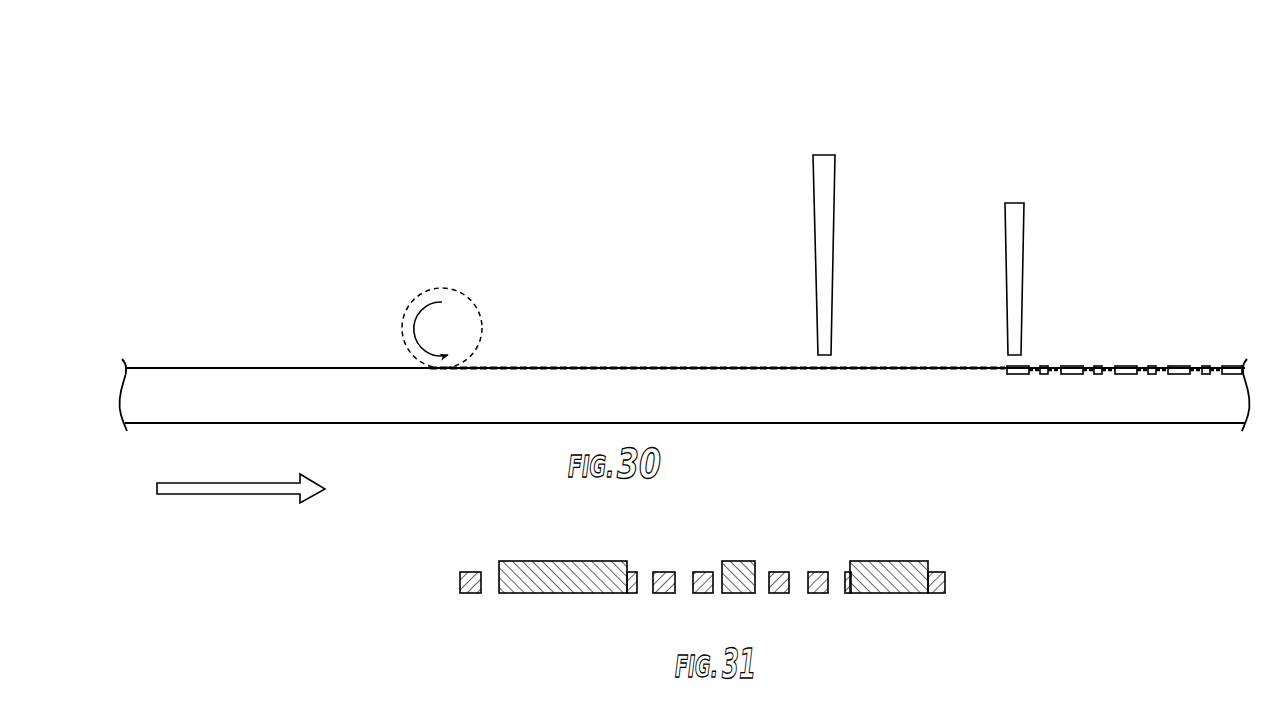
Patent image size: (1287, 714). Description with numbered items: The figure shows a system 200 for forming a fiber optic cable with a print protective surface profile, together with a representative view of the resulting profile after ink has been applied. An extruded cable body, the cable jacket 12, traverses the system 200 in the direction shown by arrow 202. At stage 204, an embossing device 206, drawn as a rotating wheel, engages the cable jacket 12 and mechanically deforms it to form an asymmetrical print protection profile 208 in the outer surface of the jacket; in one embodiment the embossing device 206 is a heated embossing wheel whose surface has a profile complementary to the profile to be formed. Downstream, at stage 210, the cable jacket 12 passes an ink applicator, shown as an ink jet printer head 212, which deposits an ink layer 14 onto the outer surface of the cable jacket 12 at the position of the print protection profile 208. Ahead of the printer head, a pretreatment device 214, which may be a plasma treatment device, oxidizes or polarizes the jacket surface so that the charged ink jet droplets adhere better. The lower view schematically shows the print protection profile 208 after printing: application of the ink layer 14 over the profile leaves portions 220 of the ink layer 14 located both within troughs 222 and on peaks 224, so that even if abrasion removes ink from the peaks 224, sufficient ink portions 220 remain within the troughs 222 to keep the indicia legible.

In FIG. 30, the cable jacket 12 is at (234, 388).
In FIG. 30, the ink layer 14 is at (1132, 337).
In FIG. 30, the system 200 is at (1030, 76).
In FIG. 30, the arrow 202 is at (217, 495).
In FIG. 30, the stage 204 is at (449, 232).
In FIG. 30, the embossing device 206 is at (466, 324).
In FIG. 30, the print protection profile 208 is at (637, 365).
In FIG. 31, the print protection profile 208 is at (824, 544).
In FIG. 30, the stage 210 is at (1026, 190).
In FIG. 30, the ink jet printer head 212 is at (1016, 268).
In FIG. 30, the pretreatment device 214 is at (826, 218).
In FIG. 31, the portions of ink layer 220 is at (552, 582).
In FIG. 31, the troughs 222 is at (489, 600).
In FIG. 31, the peaks 224 is at (460, 580).